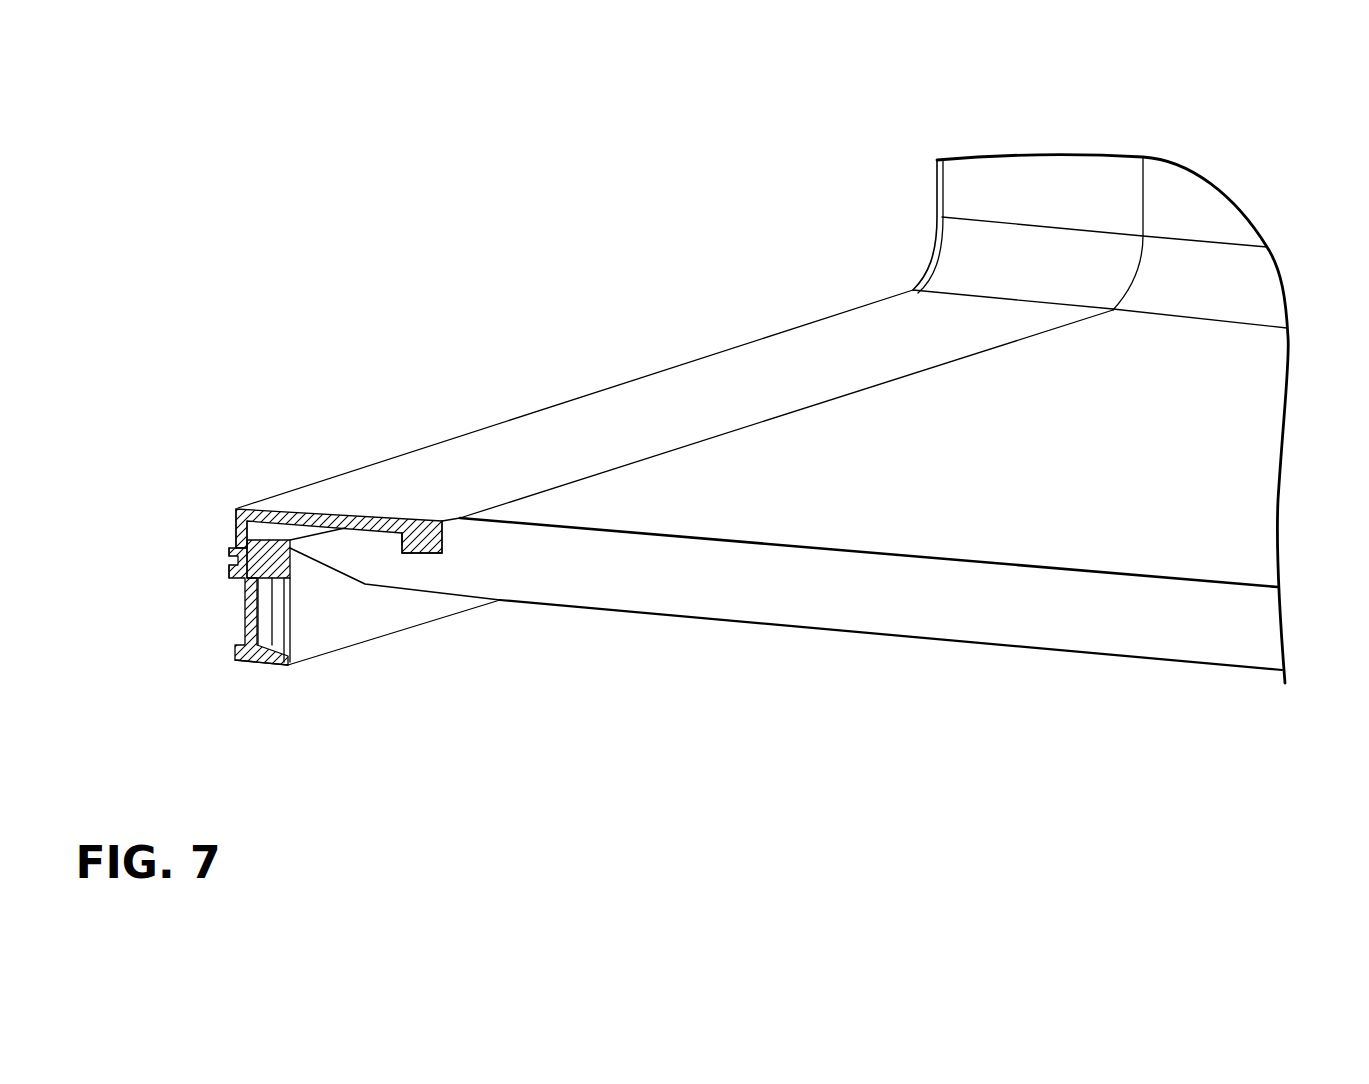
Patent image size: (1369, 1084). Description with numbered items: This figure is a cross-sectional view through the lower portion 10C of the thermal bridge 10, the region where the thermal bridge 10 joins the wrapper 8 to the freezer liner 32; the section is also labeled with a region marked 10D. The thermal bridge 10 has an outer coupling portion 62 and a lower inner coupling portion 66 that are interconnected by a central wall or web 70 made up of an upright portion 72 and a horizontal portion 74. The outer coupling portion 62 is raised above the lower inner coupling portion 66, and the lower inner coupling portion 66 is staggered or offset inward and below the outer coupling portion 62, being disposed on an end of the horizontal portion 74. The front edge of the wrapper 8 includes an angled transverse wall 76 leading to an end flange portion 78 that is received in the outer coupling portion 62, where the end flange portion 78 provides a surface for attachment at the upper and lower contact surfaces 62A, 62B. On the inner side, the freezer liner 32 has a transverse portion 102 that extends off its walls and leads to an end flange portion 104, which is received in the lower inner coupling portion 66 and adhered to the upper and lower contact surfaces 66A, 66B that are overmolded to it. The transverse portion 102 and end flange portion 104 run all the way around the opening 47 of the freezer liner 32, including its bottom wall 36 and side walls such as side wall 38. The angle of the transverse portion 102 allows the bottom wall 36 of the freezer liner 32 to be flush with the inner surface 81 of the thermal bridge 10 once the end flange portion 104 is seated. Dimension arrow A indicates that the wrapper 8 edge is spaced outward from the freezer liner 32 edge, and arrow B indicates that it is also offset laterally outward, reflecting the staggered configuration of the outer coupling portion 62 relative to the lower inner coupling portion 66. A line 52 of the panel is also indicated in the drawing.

The wrapper 8 is at (986, 668).
The thermal bridge 10 is at (578, 366).
The lower portion of the thermal bridge 10C is at (327, 436).
The channel portion 10D is at (204, 651).
The freezer liner 32 is at (1208, 464).
The bottom wall 36 is at (1134, 529).
The side wall 38 is at (1191, 204).
The opening 47 is at (400, 548).
The lower edge 52 is at (1140, 615).
The outer coupling portion 62 is at (232, 556).
The upper contact surface 62A is at (246, 523).
The lower contact surface 62B is at (242, 570).
The lower inner coupling portion 66 is at (421, 495).
The upper contact surface 66A is at (440, 522).
The lower contact surface 66B is at (414, 524).
The central wall or web 70 is at (241, 492).
The upright portion 72 is at (236, 528).
The horizontal portion 74 is at (304, 498).
The angled transverse wall 76 is at (322, 568).
The end flange portion 78 is at (268, 650).
The inner surface 81 is at (697, 391).
The transverse portion 102 is at (468, 524).
The end flange portion 104 is at (418, 540).